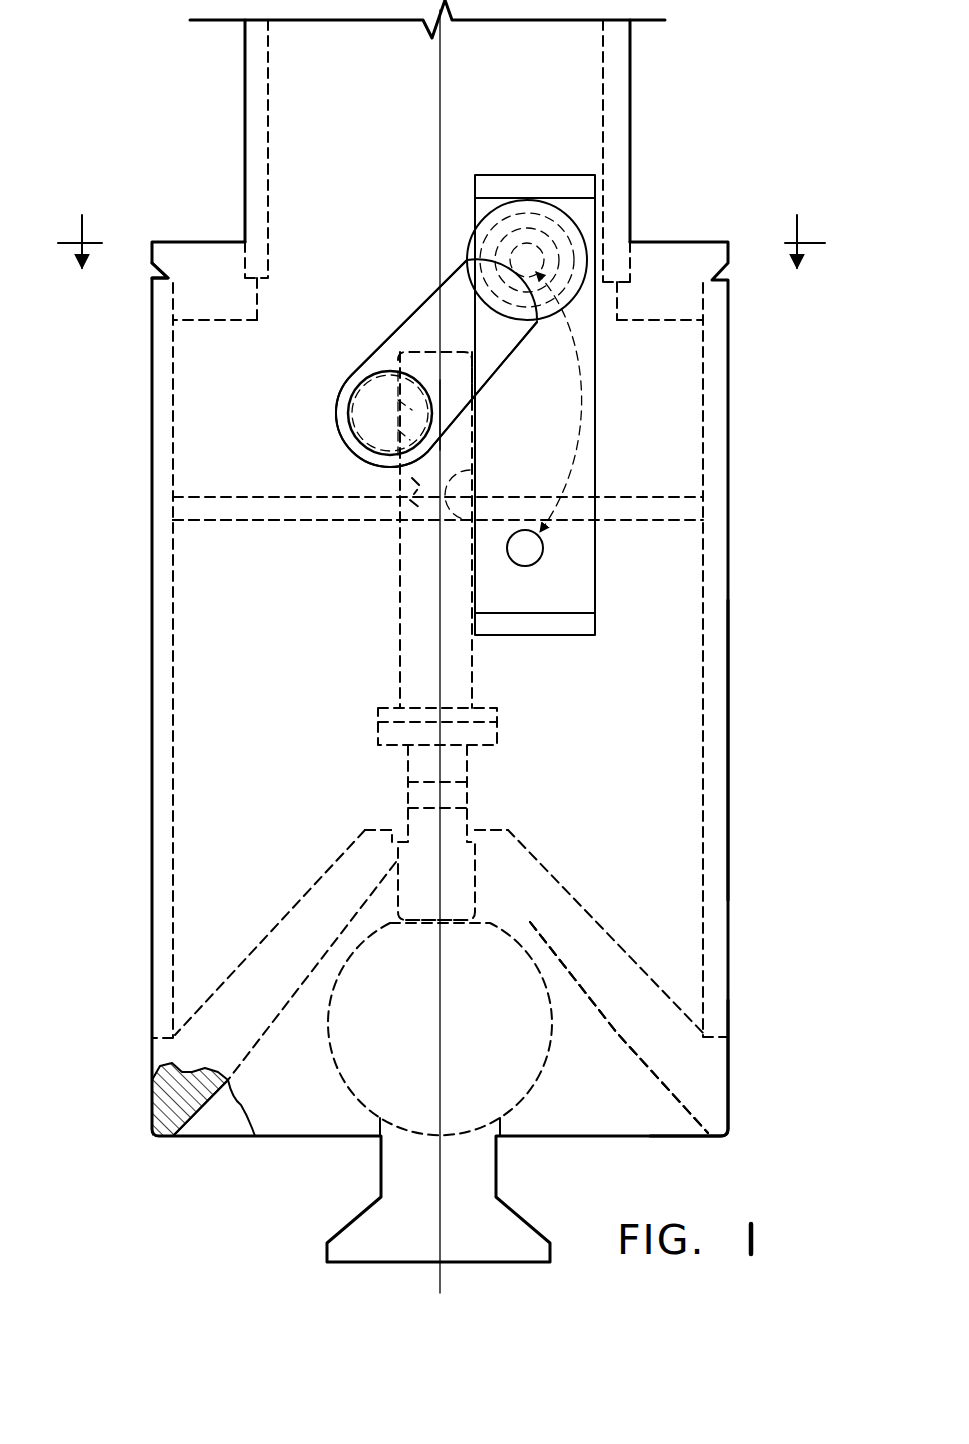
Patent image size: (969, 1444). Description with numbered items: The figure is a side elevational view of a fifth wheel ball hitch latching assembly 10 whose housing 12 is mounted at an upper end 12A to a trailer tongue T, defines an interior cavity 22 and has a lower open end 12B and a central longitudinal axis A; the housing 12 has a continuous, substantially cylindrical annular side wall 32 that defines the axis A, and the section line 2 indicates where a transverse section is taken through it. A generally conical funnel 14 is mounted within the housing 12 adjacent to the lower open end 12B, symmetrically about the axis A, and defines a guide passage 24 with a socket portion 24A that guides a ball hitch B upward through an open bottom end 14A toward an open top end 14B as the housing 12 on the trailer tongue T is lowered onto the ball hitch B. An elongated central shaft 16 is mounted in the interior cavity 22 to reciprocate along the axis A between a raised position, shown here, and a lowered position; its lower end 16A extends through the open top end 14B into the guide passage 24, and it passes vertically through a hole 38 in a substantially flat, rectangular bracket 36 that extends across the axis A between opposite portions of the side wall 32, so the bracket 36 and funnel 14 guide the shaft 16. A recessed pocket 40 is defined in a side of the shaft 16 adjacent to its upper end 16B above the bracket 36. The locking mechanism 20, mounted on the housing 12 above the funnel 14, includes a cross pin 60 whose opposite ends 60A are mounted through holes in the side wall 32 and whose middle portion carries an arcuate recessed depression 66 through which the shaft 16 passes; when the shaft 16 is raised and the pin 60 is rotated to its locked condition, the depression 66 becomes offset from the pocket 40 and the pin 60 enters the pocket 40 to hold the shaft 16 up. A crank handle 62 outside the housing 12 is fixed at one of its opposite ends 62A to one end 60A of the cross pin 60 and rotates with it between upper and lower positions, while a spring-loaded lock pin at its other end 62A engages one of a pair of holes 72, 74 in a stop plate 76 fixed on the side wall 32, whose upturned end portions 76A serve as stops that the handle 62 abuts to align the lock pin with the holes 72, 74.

The fifth wheel ball hitch latching assembly 10 is at (791, 116).
The housing 12 is at (736, 530).
The upper end 12A is at (152, 283).
The lower open end 12B is at (732, 1025).
The funnel 14 is at (165, 1093).
The open bottom end 14A is at (172, 1128).
The open top end 14B is at (392, 832).
The elongated central shaft 16 is at (400, 612).
The lower end 16A is at (460, 887).
The upper end 16B is at (398, 356).
The locking mechanism 20 is at (417, 278).
The interior cavity 22 is at (612, 797).
The guide passage 24 is at (213, 1118).
The socket portion 24A is at (545, 930).
The annular side wall 32 is at (722, 745).
The bracket 36 is at (248, 524).
The hole 38 is at (485, 463).
The recessed pocket 40 is at (408, 485).
The cross pin 60 is at (360, 397).
The opposite ends 60A is at (370, 432).
The crank handle 62 is at (402, 318).
The opposite ends 62A is at (528, 200).
The recessed depression 66 is at (476, 390).
The hole 72 is at (548, 252).
The hole 74 is at (529, 562).
The stop plate 76 is at (598, 395).
The end portions 76A is at (560, 182).
The central longitudinal axis A is at (440, 88).
The trailer tongue T is at (631, 68).
The ball hitch B is at (482, 1027).
The section line 2- 2 is at (441, 241).